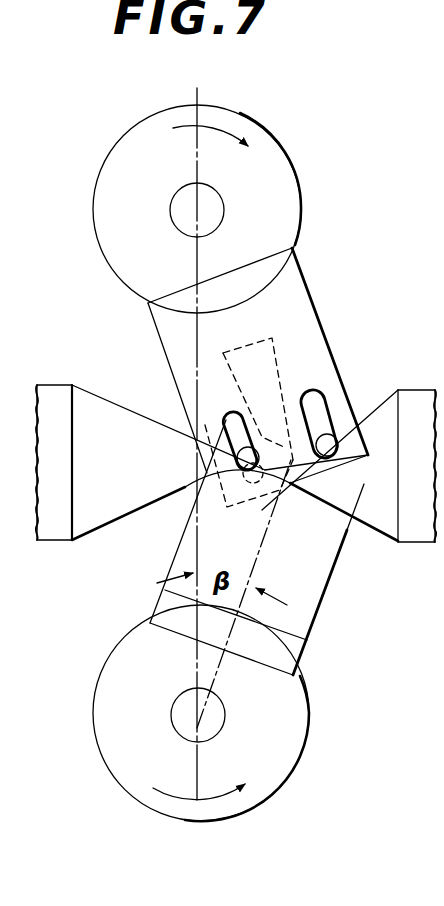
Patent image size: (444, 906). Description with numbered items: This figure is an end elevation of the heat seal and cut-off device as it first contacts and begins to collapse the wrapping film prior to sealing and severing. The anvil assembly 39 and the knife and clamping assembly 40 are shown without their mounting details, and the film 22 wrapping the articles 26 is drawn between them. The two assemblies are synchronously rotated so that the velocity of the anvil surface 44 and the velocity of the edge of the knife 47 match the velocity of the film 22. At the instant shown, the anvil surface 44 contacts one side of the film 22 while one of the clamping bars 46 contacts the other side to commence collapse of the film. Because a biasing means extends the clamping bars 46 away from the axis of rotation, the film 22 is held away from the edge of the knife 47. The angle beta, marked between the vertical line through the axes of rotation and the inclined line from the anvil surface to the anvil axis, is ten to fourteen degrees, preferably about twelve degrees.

The film 22 is at (133, 479).
The articles 26 is at (57, 398).
The anvil assembly 39 is at (147, 621).
The knife and clamping assembly 40 is at (343, 294).
The anvil surface 44 is at (333, 517).
The clamping bars 46 is at (248, 452).
The knife 47 is at (273, 398).